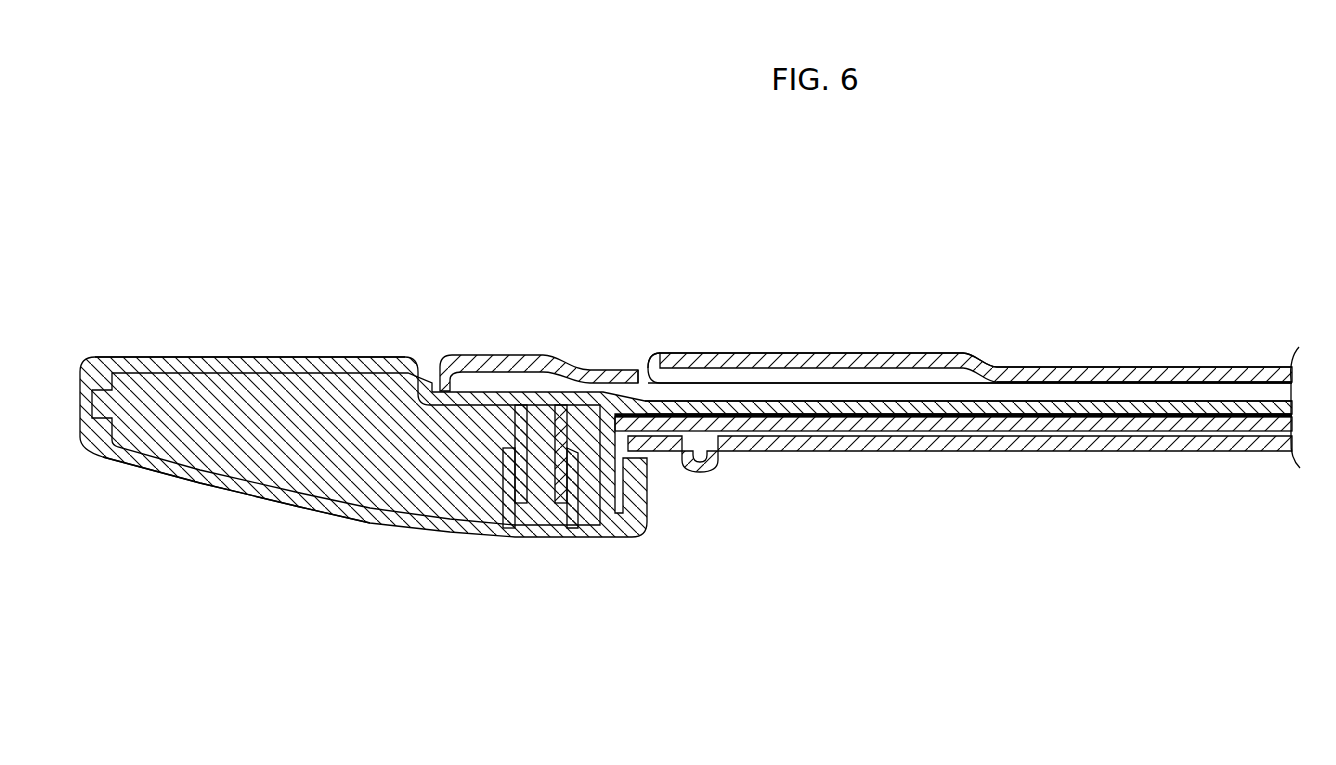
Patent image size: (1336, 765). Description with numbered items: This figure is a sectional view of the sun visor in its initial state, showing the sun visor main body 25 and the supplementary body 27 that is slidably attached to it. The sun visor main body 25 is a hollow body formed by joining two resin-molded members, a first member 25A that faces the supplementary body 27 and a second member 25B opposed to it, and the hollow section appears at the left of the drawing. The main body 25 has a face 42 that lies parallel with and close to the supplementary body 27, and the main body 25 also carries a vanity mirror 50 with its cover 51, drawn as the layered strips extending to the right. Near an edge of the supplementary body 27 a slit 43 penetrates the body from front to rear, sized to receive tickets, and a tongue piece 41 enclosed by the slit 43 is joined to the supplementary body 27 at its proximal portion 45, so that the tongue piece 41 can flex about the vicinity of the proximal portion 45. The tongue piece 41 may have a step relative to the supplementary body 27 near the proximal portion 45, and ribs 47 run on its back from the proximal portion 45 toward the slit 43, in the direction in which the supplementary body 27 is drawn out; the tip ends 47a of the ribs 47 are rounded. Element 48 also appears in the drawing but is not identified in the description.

The sun visor main body 25 is at (412, 530).
The first member 25A is at (270, 356).
The second member 25B is at (288, 508).
The supplementary body 27 is at (1070, 367).
The tongue piece 41 is at (800, 353).
The face 42 is at (905, 400).
The slit 43 is at (638, 362).
The proximal portion 45 is at (976, 355).
The ribs 47 is at (742, 353).
The tip ends of the ribs 47a is at (652, 382).
The projection 48 is at (631, 366).
The vanity mirror 50 is at (985, 433).
The cover 51 is at (1150, 453).